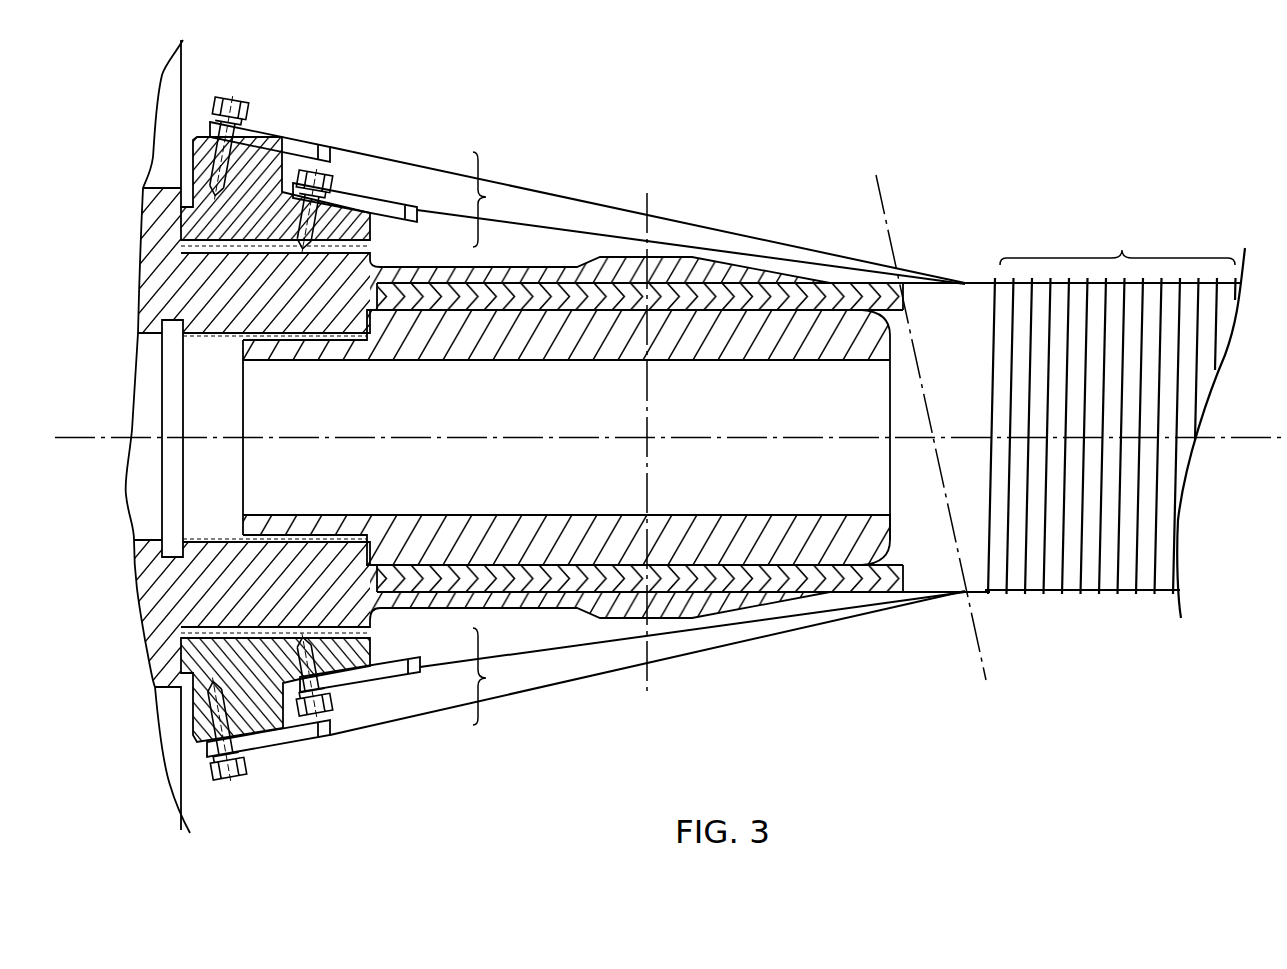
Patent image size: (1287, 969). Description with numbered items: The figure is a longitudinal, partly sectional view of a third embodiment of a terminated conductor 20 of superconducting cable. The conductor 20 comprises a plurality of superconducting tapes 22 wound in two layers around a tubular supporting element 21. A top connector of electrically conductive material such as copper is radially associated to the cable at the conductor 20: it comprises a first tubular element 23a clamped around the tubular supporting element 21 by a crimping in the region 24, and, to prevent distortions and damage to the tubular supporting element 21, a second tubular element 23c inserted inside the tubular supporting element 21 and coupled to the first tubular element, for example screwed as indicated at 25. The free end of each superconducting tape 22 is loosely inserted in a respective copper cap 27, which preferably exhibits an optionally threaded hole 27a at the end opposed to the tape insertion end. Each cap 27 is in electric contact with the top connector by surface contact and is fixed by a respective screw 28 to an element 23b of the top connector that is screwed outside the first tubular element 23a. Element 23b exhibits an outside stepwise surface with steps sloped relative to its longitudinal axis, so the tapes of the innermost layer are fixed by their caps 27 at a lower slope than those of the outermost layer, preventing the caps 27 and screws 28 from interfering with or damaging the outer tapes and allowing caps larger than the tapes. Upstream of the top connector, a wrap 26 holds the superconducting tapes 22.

The conductor 20 is at (985, 280).
The tubular supporting element 21 is at (728, 294).
The superconducting tapes 22 is at (486, 197).
The first tubular element 23a is at (327, 267).
The element of the top connector 23b is at (250, 155).
The second tubular element 23c is at (735, 547).
The crimping region 24 is at (663, 258).
The screwed coupling 25 is at (1122, 250).
The wrap 26 is at (333, 328).
The cap 27 is at (304, 728).
The hole 27a is at (327, 672).
The screw 28 is at (238, 770).